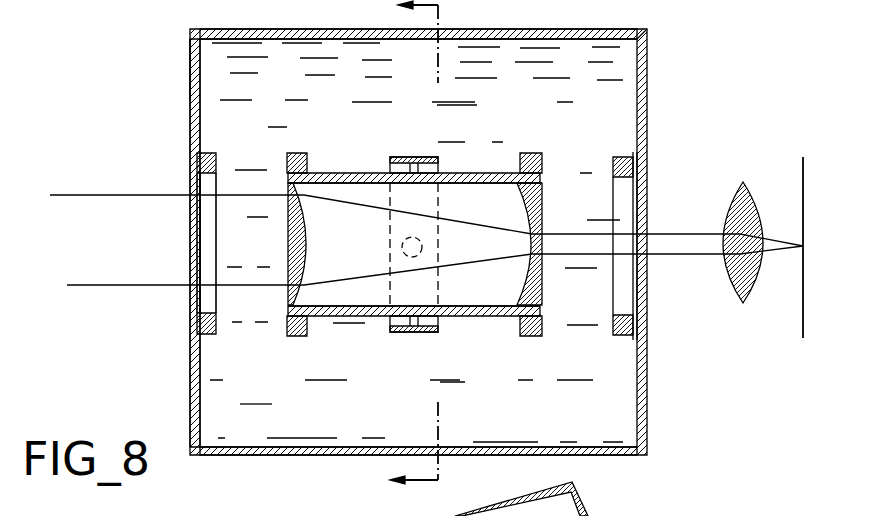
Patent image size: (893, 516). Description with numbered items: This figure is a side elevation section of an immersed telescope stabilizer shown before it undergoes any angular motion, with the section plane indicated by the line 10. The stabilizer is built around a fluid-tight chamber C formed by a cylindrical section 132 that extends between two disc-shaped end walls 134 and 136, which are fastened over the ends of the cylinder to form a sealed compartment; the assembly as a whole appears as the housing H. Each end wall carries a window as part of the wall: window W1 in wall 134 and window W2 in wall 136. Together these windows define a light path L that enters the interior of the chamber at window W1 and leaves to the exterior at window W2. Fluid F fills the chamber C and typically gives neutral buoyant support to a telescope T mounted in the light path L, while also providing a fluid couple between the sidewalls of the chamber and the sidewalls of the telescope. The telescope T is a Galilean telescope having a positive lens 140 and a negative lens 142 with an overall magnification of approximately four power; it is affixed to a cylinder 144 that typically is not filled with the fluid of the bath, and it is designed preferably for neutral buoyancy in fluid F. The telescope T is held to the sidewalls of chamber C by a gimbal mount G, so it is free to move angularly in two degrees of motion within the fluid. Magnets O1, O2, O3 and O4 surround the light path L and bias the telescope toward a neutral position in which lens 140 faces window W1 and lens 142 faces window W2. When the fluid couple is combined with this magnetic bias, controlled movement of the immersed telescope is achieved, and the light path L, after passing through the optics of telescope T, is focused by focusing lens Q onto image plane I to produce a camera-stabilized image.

The section line 10- 10 is at (391, 250).
The cylindrical section 132 is at (537, 33).
The end wall 134 is at (190, 393).
The end wall 136 is at (646, 418).
The positive lens 140 is at (288, 243).
The negative lens 142 is at (541, 212).
The cylinder 144 is at (362, 172).
The housing H is at (190, 64).
The chamber C is at (647, 80).
The fluid F is at (256, 390).
The window W1 is at (190, 241).
The window W2 is at (645, 192).
The magnet O1 is at (213, 153).
The magnet O2 is at (296, 152).
The magnet O3 is at (532, 155).
The magnet O4 is at (617, 155).
The light path L is at (148, 290).
The gimbal mount G is at (404, 335).
The telescope T is at (483, 318).
The focusing lens Q is at (740, 305).
The image plane I is at (803, 313).